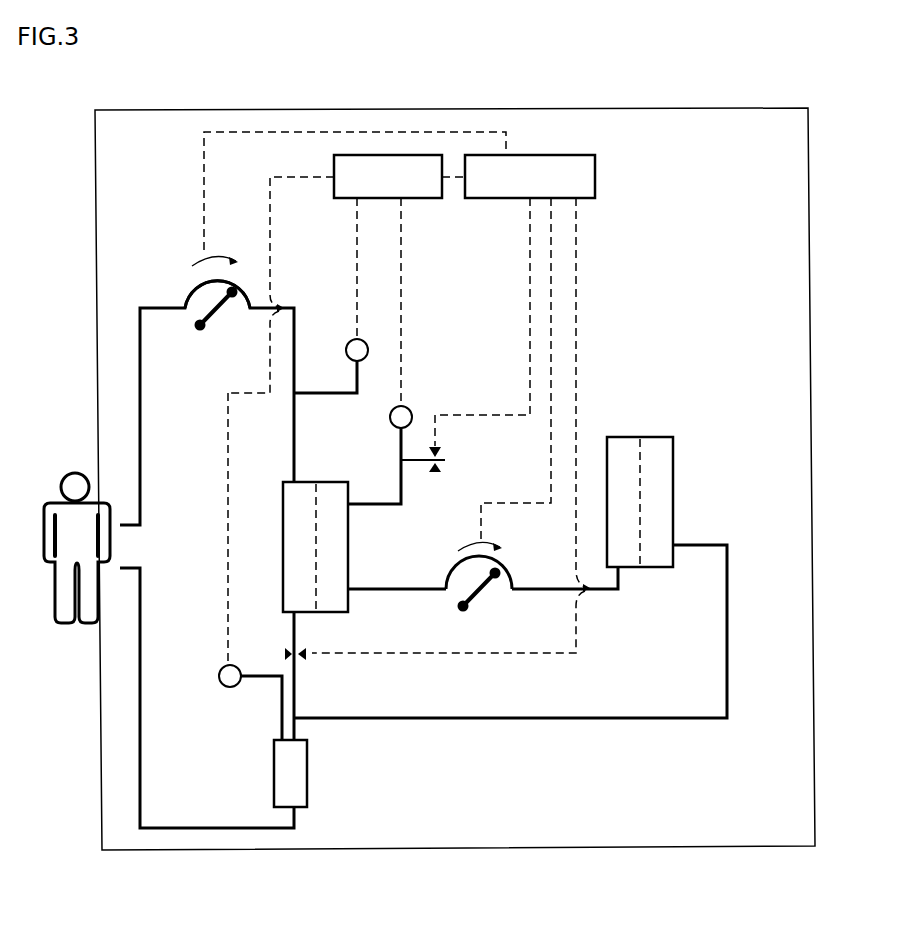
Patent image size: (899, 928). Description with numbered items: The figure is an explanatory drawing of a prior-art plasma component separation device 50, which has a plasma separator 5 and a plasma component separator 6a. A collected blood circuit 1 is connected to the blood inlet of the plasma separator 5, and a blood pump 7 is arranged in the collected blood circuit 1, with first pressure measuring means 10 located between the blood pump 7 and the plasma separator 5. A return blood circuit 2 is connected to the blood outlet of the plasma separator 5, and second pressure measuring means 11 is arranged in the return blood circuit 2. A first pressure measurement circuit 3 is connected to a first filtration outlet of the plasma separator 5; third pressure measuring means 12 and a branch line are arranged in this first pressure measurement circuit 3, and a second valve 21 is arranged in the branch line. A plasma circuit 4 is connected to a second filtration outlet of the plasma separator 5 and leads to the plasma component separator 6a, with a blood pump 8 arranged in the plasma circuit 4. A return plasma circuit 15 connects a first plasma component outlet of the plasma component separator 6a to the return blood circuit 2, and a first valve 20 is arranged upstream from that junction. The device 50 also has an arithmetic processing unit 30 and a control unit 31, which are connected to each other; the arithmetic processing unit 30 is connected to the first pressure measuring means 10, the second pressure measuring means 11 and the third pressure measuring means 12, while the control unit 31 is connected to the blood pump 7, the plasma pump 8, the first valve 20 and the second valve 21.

The collected blood circuit 1 is at (150, 418).
The return blood circuit 2 is at (147, 771).
The first pressure measurement circuit 3 is at (410, 495).
The plasma circuit 4 is at (380, 610).
The plasma separator 5 is at (277, 538).
The plasma component separator 6a is at (640, 437).
The blood pump 7 is at (180, 292).
The blood pump 8 is at (512, 575).
The first pressure measuring means 10 is at (347, 343).
The second pressure measuring means 11 is at (220, 665).
The third pressure measuring means 12 is at (418, 412).
The return plasma circuit 15 is at (540, 715).
The first valve 20 is at (305, 660).
The second valve 21 is at (445, 455).
The arithmetic processing unit 30 is at (440, 198).
The control unit 31 is at (590, 198).
The plasma component separation device 50 is at (385, 848).